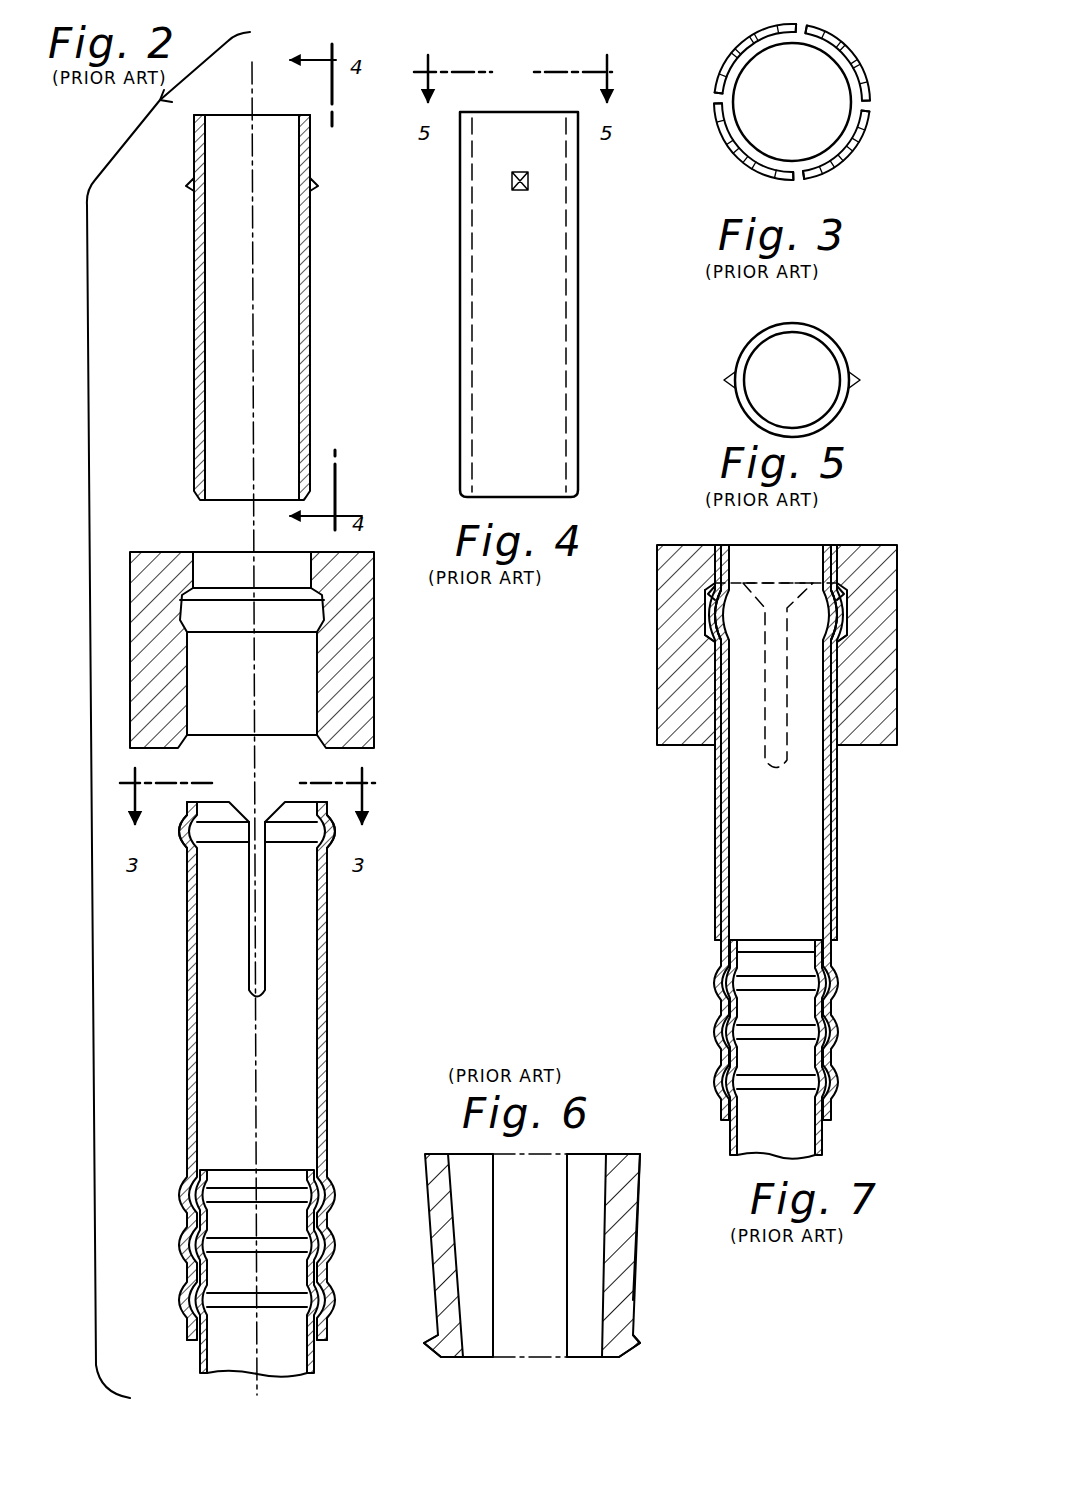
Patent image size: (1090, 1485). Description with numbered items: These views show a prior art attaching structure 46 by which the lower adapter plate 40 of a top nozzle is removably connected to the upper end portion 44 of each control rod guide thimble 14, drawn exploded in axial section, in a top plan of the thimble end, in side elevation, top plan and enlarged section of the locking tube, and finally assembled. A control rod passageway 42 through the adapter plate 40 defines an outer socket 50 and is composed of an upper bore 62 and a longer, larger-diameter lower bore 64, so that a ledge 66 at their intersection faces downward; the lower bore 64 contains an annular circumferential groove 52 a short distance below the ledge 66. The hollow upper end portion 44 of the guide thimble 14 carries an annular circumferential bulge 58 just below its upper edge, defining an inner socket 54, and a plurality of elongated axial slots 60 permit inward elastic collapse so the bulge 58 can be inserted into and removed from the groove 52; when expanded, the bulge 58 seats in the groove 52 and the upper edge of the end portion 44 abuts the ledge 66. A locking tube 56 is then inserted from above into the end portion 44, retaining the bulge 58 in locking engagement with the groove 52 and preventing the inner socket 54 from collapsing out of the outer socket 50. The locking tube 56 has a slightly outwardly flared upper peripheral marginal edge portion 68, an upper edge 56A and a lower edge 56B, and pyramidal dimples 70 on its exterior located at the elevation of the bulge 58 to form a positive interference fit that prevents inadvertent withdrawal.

In FIG. 2, the control rod guide thimble 14 is at (199, 1355).
In FIG. 7, the control rod guide thimble 14 is at (836, 1134).
In FIG. 2, the lower adapter plate 40 is at (372, 705).
In FIG. 7, the lower adapter plate 40 is at (658, 693).
In FIG. 2, the control rod passageway 42 is at (318, 712).
In FIG. 2, the upper end portion 44 is at (188, 1100).
In FIG. 7, the upper end portion 44 is at (840, 918).
In FIG. 2, the attaching structure 46 is at (178, 452).
In FIG. 7, the attaching structure 46 is at (702, 528).
In FIG. 2, the outer socket 50 is at (205, 550).
In FIG. 7, the outer socket 50 is at (812, 548).
In FIG. 2, the annular circumferential groove 52 is at (188, 620).
In FIG. 7, the annular circumferential groove 52 is at (710, 635).
In FIG. 2, the inner socket 54 is at (188, 1023).
In FIG. 3, the inner socket 54 is at (745, 176).
In FIG. 7, the inner socket 54 is at (834, 712).
In FIG. 2, the locking tube 56 is at (312, 313).
In FIG. 4, the locking tube 56 is at (582, 310).
In FIG. 5, the locking tube 56 is at (842, 410).
In FIG. 7, the locking tube 56 is at (840, 878).
In FIG. 6, the locking tube 56 is at (438, 1148).
In FIG. 2, the upper edge 56A is at (197, 108).
In FIG. 2, the lower edge 56B is at (200, 500).
In FIG. 2, the annular circumferential bulge 58 is at (178, 838).
In FIG. 3, the annular circumferential bulge 58 is at (718, 80).
In FIG. 7, the annular circumferential bulge 58 is at (846, 638).
In FIG. 2, the elongated axial slot 60 is at (254, 945).
In FIG. 3, the elongated axial slot 60 is at (745, 52).
In FIG. 7, the elongated axial slot 60 is at (850, 800).
In FIG. 2, the upper bore 62 is at (312, 580).
In FIG. 7, the upper bore 62 is at (724, 548).
In FIG. 2, the lower bore 64 is at (318, 655).
In FIG. 7, the lower bore 64 is at (670, 716).
In FIG. 2, the ledge 66 is at (320, 615).
In FIG. 2, the upper peripheral marginal edge portion 68 is at (312, 148).
In FIG. 4, the upper peripheral marginal edge portion 68 is at (579, 153).
In FIG. 7, the upper peripheral marginal edge portion 68 is at (840, 570).
In FIG. 6, the upper peripheral marginal edge portion 68 is at (634, 1265).
In FIG. 2, the dimple 70 is at (187, 188).
In FIG. 4, the dimple 70 is at (530, 182).
In FIG. 5, the dimple 70 is at (738, 372).
In FIG. 7, the dimple 70 is at (708, 606).
In FIG. 6, the dimple 70 is at (428, 1340).